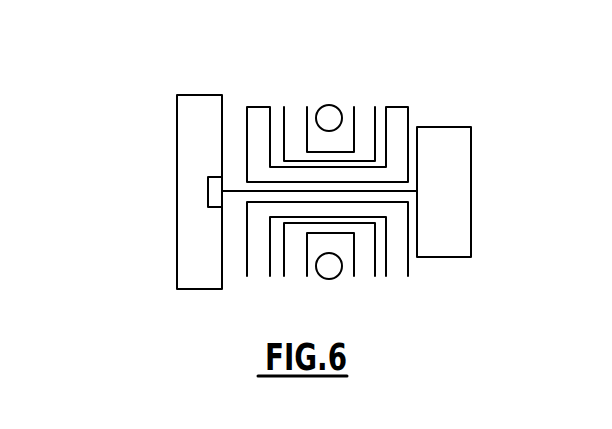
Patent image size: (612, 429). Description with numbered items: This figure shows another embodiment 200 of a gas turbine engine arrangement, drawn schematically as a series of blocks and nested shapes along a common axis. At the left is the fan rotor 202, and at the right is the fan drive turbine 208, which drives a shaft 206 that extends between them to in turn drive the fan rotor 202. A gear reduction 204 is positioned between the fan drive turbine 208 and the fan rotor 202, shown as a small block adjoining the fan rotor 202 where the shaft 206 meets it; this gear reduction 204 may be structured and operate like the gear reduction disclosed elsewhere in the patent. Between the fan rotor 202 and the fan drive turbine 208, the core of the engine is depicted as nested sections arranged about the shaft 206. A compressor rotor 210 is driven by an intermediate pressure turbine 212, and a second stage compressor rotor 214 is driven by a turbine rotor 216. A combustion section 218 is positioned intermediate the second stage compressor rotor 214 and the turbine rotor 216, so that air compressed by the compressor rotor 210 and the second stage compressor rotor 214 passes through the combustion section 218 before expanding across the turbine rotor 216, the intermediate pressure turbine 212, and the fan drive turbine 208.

The embodiment 200 is at (146, 73).
The fan rotor 202 is at (188, 140).
The gear reduction 204 is at (210, 202).
The shaft 206 is at (396, 190).
The fan drive turbine 208 is at (457, 173).
The compressor rotor 210 is at (258, 252).
The intermediate pressure turbine 212 is at (400, 198).
The second stage compressor rotor 214 is at (293, 113).
The turbine rotor 216 is at (363, 112).
The combustion section 218 is at (330, 105).